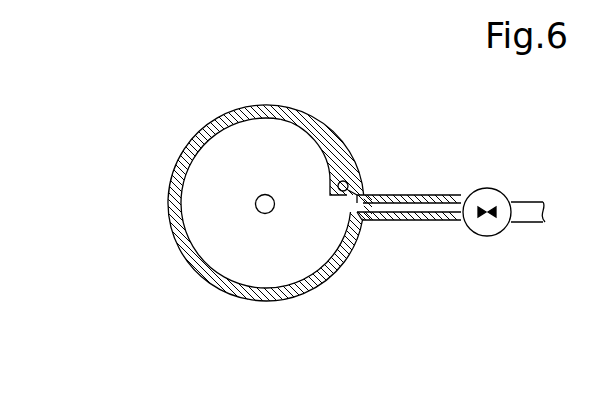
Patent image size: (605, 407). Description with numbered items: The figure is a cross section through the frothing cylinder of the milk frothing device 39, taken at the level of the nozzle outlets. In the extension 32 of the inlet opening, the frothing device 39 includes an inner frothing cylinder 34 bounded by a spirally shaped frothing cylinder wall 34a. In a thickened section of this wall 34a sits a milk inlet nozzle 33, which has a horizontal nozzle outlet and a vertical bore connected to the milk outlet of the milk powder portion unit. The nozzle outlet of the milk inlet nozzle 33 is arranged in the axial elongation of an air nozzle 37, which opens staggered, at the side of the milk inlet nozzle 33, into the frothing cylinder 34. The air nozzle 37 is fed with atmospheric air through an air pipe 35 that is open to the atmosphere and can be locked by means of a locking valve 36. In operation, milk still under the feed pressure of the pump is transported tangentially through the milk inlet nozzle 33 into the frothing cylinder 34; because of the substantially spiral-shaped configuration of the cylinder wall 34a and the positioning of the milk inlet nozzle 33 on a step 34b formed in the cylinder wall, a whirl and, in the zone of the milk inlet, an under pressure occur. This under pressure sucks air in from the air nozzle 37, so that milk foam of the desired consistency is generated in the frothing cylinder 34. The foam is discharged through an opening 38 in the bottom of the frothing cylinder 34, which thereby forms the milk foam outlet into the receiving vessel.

The extension of the inlet opening 32 is at (357, 163).
The milk inlet nozzle 33 is at (340, 200).
The frothing cylinder 34 is at (282, 255).
The frothing cylinder wall 34a is at (318, 120).
The step 34b is at (352, 188).
The air pipe 35 is at (438, 222).
The locking valve 36 is at (497, 188).
The air nozzle 37 is at (367, 222).
The opening in the bottom of the frothing cylinder 38 is at (259, 212).
The milk frothing device 39 is at (140, 108).